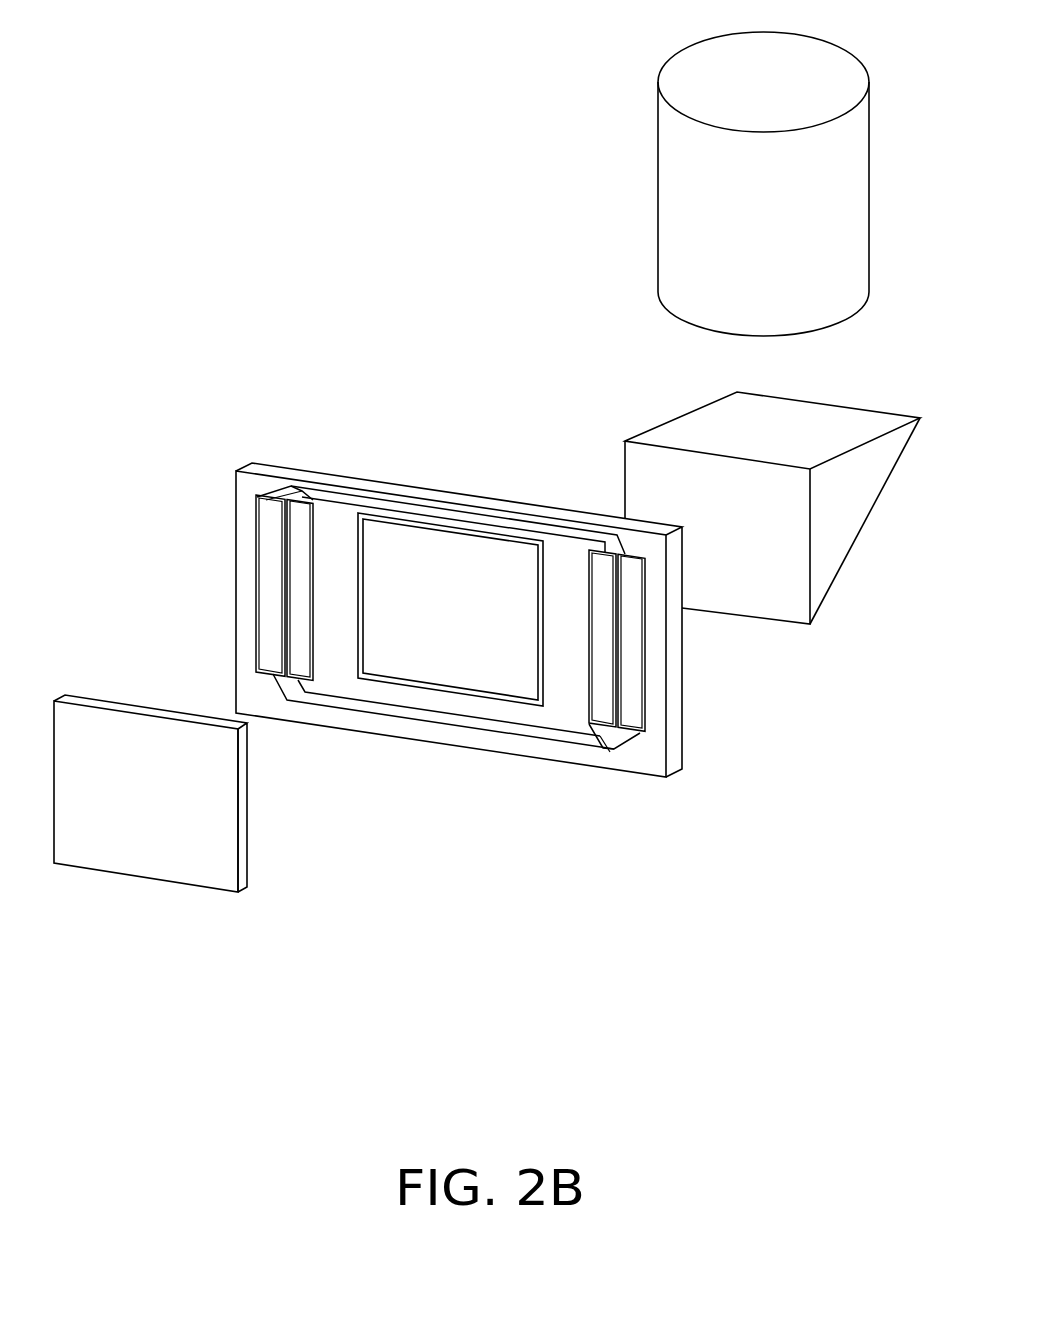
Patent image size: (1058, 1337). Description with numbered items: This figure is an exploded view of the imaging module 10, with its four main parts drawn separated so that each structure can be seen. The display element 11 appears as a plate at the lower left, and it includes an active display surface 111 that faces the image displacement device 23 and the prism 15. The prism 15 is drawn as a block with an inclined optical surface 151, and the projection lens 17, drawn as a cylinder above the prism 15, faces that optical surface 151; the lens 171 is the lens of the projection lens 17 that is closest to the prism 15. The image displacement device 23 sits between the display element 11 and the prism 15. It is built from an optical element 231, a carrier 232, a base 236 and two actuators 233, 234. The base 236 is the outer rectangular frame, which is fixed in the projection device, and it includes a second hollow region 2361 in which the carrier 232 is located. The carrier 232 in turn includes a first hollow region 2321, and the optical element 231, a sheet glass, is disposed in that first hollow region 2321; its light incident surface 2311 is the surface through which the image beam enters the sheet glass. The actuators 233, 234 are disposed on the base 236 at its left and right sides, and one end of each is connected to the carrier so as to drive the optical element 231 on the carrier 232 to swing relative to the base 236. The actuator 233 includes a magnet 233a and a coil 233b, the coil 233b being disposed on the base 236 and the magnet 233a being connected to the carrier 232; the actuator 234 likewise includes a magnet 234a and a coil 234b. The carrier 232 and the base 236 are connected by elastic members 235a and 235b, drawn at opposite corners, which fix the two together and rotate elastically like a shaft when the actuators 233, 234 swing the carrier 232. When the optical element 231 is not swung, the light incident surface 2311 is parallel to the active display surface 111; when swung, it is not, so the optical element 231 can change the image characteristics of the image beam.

The imaging module 10 is at (174, 78).
The display element 11 is at (178, 826).
The active display surface 111 is at (247, 823).
The prism 15 is at (781, 531).
The optical surface 151 is at (855, 542).
The projection lens 17 is at (803, 208).
The lens 171 is at (813, 332).
The image displacement device 23 is at (461, 585).
The optical element 231 is at (450, 517).
The light incident surface 2311 is at (423, 557).
The carrier 232 is at (451, 668).
The first hollow region 2321 is at (468, 697).
The actuator 233 is at (183, 578).
The magnet 233a is at (295, 605).
The coil 233b is at (270, 552).
The actuator 234 is at (729, 671).
The magnet 234a is at (598, 683).
The coil 234b is at (627, 665).
The elastic member 235a is at (300, 487).
The elastic member 235b is at (602, 745).
The base 236 is at (459, 616).
The second hollow region 2361 is at (412, 715).